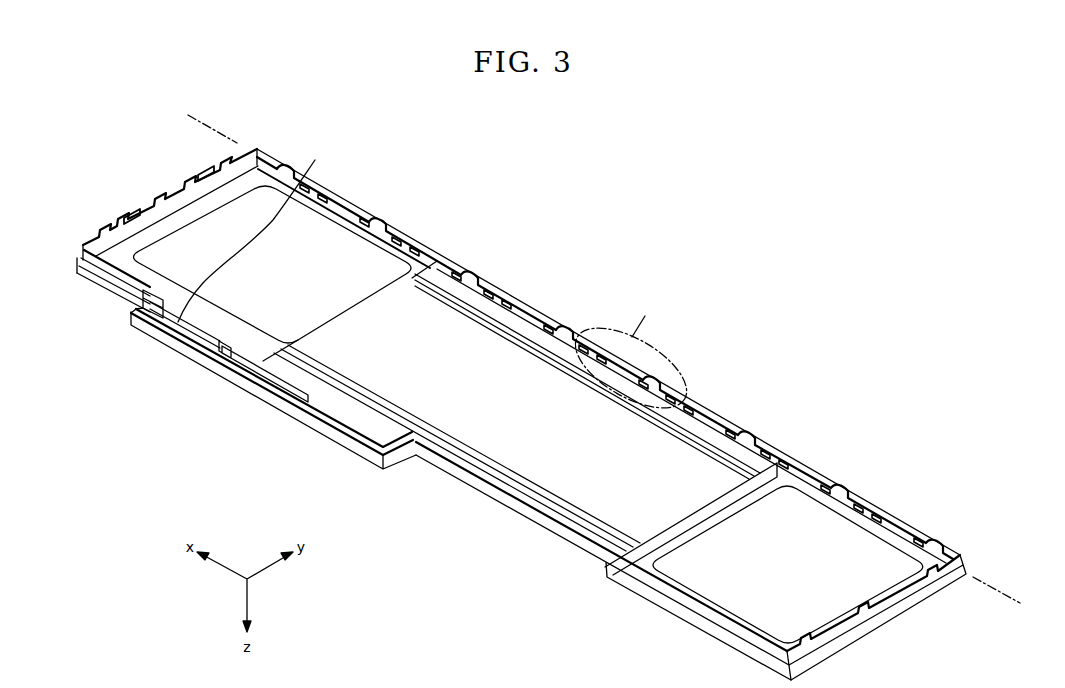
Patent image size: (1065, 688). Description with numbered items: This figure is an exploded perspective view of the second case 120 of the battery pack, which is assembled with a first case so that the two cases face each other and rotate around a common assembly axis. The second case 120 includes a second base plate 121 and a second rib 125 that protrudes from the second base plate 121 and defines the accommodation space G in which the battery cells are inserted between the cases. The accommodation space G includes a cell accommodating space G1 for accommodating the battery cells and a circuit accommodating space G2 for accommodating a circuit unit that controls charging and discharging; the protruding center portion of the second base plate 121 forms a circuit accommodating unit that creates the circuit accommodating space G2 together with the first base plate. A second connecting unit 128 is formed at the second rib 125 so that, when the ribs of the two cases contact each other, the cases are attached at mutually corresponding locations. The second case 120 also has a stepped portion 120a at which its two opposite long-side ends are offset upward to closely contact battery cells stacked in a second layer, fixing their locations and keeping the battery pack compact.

The second case 120 is at (745, 300).
The stepped portion 120a is at (782, 462).
The second base plate 121 is at (383, 266).
The second rib 125 is at (455, 262).
The second connecting unit 128 is at (492, 283).
The accommodation space G is at (313, 137).
The cell accommodating space G1 is at (320, 248).
The circuit accommodating space G2 is at (256, 231).